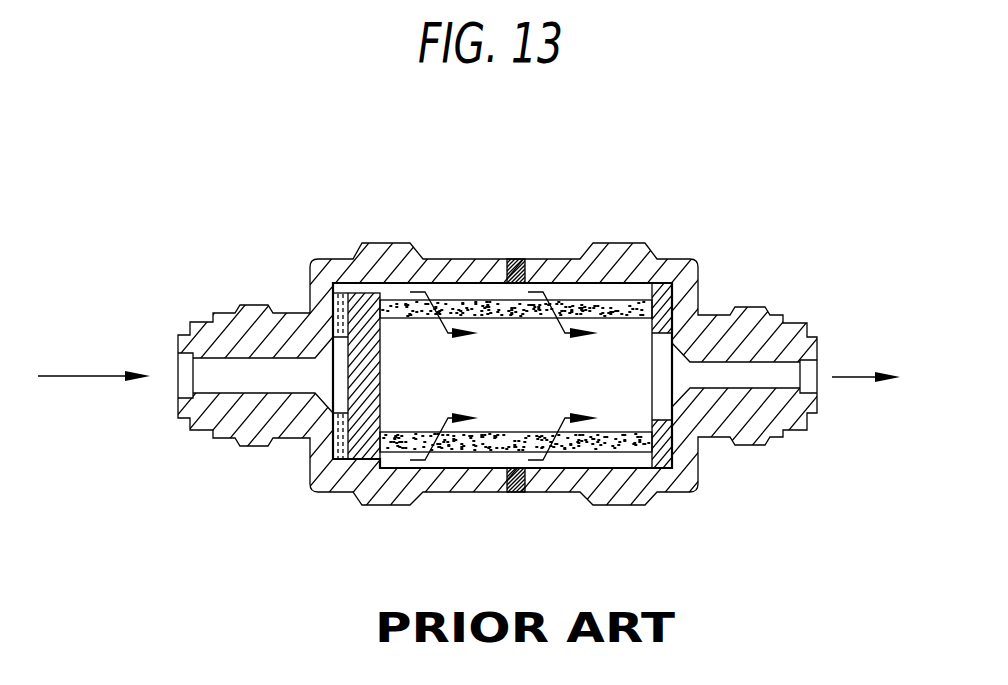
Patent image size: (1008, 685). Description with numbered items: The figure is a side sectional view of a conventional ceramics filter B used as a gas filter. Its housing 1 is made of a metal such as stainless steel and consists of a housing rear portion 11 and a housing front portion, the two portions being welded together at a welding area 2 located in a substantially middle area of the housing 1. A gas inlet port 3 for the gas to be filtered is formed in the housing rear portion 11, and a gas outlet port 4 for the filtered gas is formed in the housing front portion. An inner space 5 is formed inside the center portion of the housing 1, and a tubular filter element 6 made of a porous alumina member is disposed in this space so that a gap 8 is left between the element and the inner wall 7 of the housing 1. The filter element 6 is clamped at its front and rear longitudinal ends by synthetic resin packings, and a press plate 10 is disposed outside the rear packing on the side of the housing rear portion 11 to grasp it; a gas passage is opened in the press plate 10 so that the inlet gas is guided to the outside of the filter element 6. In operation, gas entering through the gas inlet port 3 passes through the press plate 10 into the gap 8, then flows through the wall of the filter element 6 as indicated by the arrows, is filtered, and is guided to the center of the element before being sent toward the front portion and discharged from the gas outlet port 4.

The dryer (prior art) B is at (445, 250).
The housing 1 is at (400, 258).
The welding area 2 is at (522, 259).
The gas inlet port 3 is at (177, 363).
The gas outlet port 4 is at (810, 373).
The inner space 5 is at (417, 412).
The filter element 6 is at (470, 298).
The inner wall 7 is at (578, 290).
The gap 8 is at (625, 290).
The press plate 10 is at (345, 418).
The housing rear portion 11 is at (340, 295).